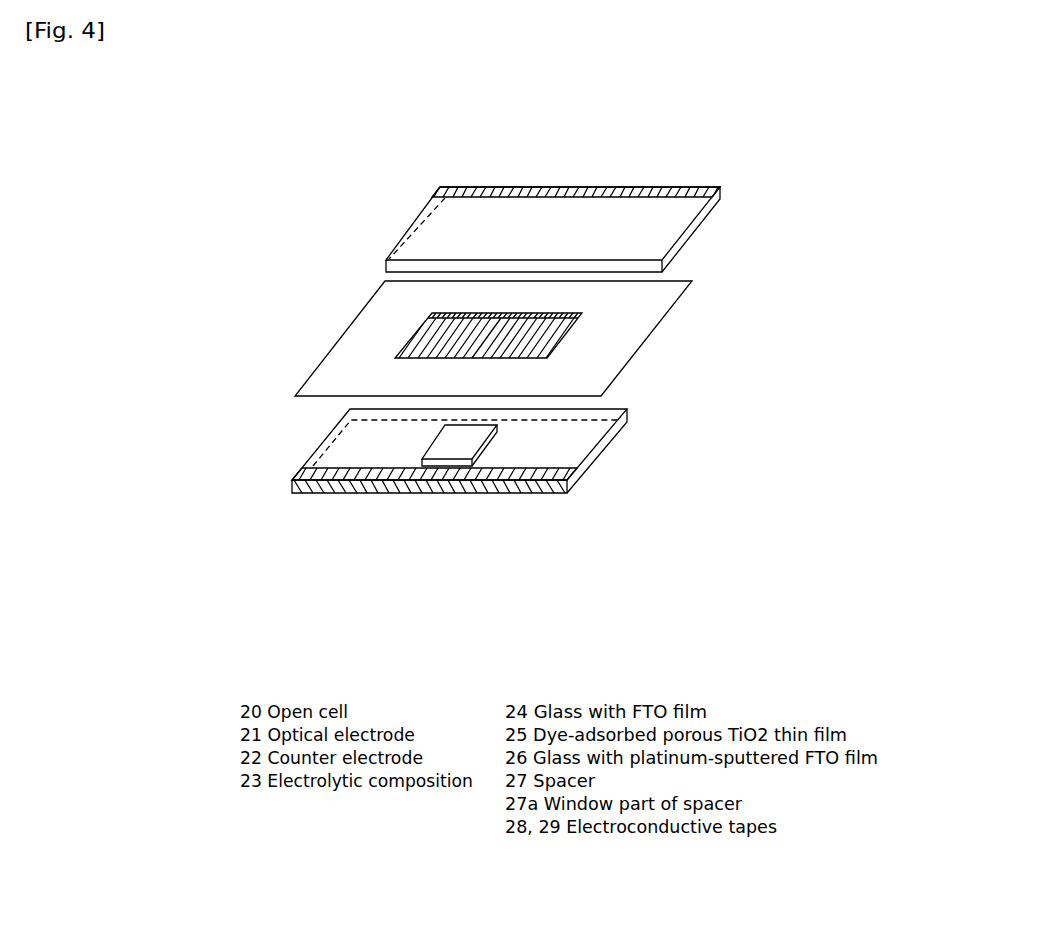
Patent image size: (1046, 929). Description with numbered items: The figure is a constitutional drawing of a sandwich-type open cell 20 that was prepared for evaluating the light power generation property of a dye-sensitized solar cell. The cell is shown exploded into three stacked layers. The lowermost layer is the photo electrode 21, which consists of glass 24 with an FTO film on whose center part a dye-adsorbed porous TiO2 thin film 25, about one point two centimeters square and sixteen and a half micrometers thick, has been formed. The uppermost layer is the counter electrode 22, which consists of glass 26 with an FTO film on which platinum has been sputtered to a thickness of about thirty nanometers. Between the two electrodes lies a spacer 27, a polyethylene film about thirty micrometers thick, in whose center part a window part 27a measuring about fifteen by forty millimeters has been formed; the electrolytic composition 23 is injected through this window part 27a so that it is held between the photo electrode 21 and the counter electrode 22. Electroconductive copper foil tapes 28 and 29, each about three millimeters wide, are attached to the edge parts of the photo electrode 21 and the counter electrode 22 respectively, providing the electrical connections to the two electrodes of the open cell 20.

The sandwich-type open cell 20 is at (286, 118).
The photo electrode 21 is at (336, 495).
The counter electrode 22 is at (714, 218).
The electrolytic composition 23 is at (548, 338).
The glass with FTO film 24 is at (555, 455).
The dye-adsorbed porous TiO2 thin film 25 is at (477, 435).
The glass with platinum-sputtered FTO film 26 is at (462, 220).
The spacer 27 is at (389, 309).
The window part of spacer 27a is at (390, 344).
The electroconductive copper foil tape 28 is at (511, 479).
The electroconductive copper foil tape 29 is at (598, 188).